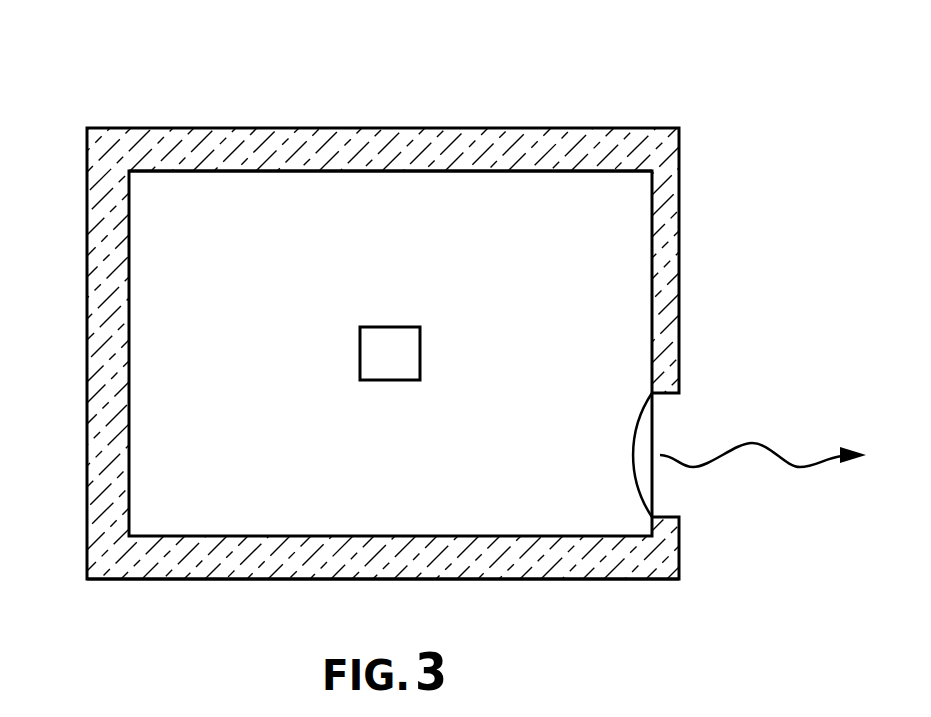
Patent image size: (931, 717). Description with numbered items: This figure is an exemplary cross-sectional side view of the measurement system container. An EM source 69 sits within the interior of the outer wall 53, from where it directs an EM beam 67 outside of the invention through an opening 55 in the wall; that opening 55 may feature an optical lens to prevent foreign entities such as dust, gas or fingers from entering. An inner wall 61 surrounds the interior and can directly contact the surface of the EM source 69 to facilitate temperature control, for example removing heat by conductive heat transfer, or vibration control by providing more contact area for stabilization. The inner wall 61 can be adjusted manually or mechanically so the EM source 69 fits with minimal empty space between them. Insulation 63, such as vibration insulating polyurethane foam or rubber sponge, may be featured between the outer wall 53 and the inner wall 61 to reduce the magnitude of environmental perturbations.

The outer wall 53 is at (580, 128).
The opening 55 is at (670, 515).
The inner wall 61 is at (258, 173).
The insulation 63 is at (178, 568).
The EM beam 67 is at (772, 439).
The EM source 69 is at (388, 345).